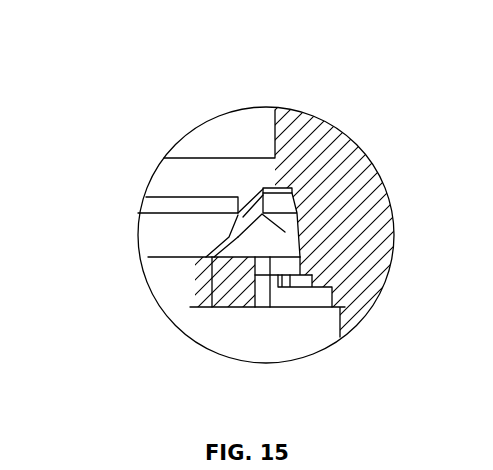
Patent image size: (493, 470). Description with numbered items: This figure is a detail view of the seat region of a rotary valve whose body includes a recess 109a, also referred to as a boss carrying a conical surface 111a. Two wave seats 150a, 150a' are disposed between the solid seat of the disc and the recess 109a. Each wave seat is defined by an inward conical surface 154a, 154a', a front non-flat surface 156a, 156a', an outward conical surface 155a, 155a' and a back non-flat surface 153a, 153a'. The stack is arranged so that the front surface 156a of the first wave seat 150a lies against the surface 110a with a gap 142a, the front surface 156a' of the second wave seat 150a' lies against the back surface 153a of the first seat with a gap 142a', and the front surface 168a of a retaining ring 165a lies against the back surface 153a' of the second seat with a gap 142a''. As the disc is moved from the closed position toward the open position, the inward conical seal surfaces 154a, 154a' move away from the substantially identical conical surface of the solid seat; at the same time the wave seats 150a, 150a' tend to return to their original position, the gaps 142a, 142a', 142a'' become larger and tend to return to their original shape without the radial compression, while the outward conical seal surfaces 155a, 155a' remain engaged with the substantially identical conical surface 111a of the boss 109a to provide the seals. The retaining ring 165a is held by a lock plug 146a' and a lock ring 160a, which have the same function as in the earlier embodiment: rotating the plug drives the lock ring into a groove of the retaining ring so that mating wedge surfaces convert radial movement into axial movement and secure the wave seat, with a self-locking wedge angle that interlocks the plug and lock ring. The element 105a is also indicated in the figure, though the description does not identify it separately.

The base member 105a is at (336, 308).
The recess 109a is at (362, 150).
The surface 110a is at (240, 213).
The conical surface of boss 111a is at (300, 262).
The gap 142a is at (335, 126).
The gap 142a' is at (185, 119).
The gap 142a'' is at (161, 333).
The lock plug 146a' is at (266, 354).
The wave seat 150a is at (243, 117).
The wave seat 150a' is at (377, 304).
The back non-flat surface 153a is at (359, 220).
The back non-flat surface 153a' is at (128, 301).
The inward conical surface 154a is at (165, 202).
The inward conical surface 154a' is at (157, 233).
The outward conical surface 155a is at (368, 135).
The outward conical surface 155a' is at (372, 238).
The front non-flat surface 156a is at (134, 183).
The front non-flat surface 156a' is at (128, 209).
The lock ring 160a is at (305, 302).
The retaining ring 165a is at (208, 285).
The front surface of retaining ring 168a is at (217, 257).